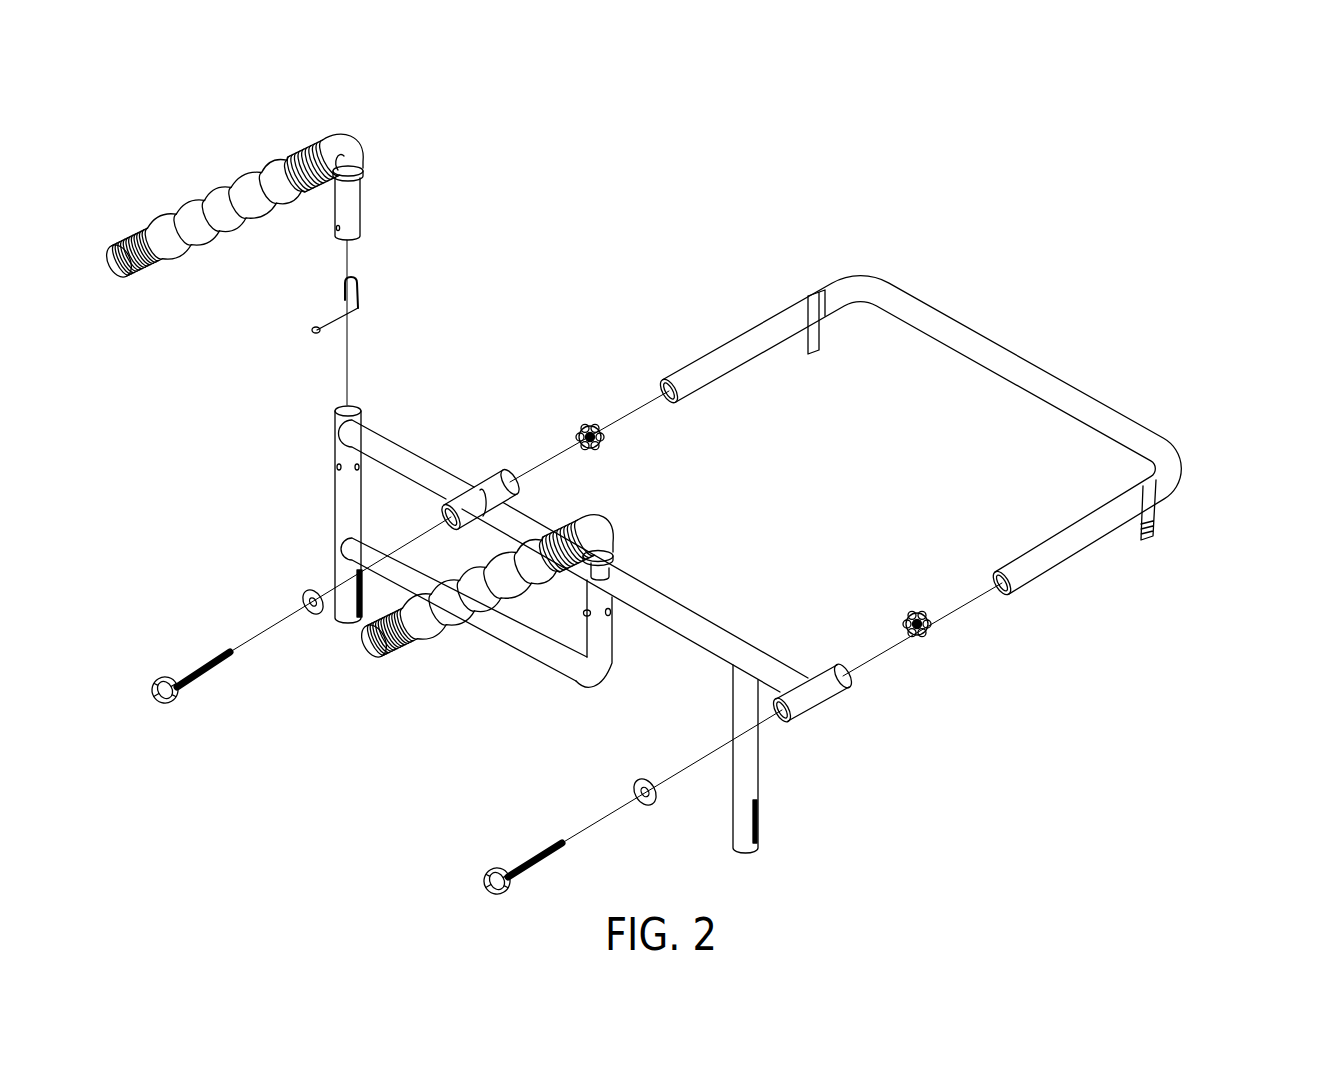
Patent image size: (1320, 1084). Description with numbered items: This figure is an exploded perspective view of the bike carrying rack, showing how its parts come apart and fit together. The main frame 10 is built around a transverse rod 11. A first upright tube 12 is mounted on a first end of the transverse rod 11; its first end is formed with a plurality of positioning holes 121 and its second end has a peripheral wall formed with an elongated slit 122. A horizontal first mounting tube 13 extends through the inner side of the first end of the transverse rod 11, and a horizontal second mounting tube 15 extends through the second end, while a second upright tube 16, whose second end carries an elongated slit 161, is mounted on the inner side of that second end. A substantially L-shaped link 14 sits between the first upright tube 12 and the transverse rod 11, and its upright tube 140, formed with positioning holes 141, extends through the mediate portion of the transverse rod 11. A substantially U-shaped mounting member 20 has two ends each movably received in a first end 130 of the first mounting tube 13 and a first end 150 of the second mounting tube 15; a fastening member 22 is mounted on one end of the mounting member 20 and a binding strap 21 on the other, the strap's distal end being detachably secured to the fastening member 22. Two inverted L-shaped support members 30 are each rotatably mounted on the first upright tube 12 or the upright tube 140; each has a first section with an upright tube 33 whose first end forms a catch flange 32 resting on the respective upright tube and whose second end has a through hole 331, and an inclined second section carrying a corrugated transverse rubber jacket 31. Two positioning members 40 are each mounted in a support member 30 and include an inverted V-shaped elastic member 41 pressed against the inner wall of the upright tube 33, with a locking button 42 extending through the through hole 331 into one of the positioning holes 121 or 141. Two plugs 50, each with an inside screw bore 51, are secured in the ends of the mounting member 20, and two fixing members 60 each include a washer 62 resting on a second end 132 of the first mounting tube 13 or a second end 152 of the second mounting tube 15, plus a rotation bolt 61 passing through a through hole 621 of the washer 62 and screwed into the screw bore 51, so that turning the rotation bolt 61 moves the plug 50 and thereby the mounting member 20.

The main frame 10 is at (722, 684).
The transverse rod 11 is at (665, 612).
The first upright tube 12 is at (281, 549).
The positioning holes 121 is at (336, 467).
The elongated slit 122 is at (350, 617).
The first mounting tube 13 is at (444, 431).
The first end of the first mounting tube 130 is at (502, 477).
The second end of the first mounting tube 132 is at (462, 507).
The link 14 is at (525, 635).
The upright tube 140 is at (581, 656).
The positioning holes 141 is at (611, 614).
The second mounting tube 15 is at (876, 691).
The first end of the second mounting tube 150 is at (832, 673).
The second end of the second mounting tube 152 is at (807, 708).
The second upright tube 16 is at (806, 781).
The elongated slit 161 is at (760, 827).
The mounting member 20 is at (976, 397).
The binding strap 21 is at (818, 297).
The fastening member 22 is at (1155, 530).
The support members 30 is at (378, 377).
The corrugated transverse rubber jacket 31 is at (190, 210).
The catch flange 32 is at (363, 175).
The upright tube 33 is at (372, 219).
The through hole 331 is at (337, 229).
The positioning members 40 is at (442, 427).
The elastic member 41 is at (357, 277).
The locking button 42 is at (318, 326).
The plugs 50 is at (595, 420).
The screw bore 51 is at (921, 636).
The fixing members 60 is at (240, 622).
The rotation bolt 61 is at (495, 867).
The washer 62 is at (629, 807).
The through hole 621 is at (640, 810).